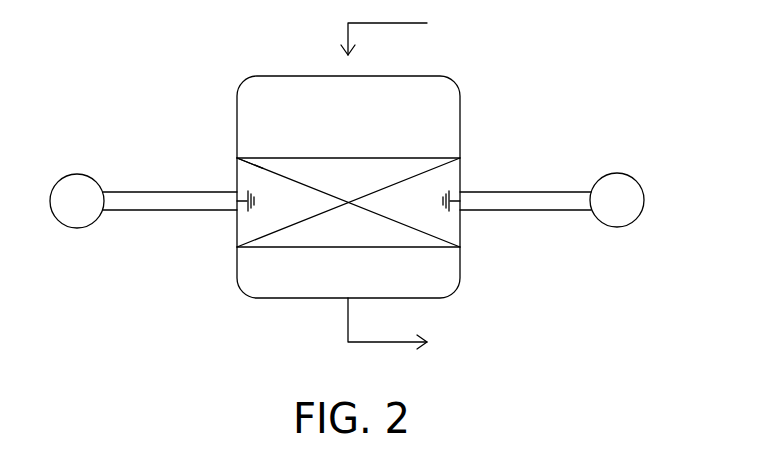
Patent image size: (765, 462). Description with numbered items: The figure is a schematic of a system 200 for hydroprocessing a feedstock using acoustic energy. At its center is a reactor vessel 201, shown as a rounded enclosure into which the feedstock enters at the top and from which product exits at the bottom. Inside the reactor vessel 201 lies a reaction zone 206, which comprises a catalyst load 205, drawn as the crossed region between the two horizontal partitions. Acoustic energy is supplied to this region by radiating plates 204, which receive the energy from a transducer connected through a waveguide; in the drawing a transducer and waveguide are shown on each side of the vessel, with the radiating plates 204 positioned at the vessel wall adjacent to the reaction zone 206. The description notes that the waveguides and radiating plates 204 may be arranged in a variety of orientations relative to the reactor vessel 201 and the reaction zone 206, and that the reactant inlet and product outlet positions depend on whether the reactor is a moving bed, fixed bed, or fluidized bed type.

The system 200 is at (517, 290).
The reactor vessel 201 is at (458, 83).
The radiating plates 204 is at (245, 207).
The catalyst load 205 is at (368, 188).
The reaction zone 206 is at (263, 185).